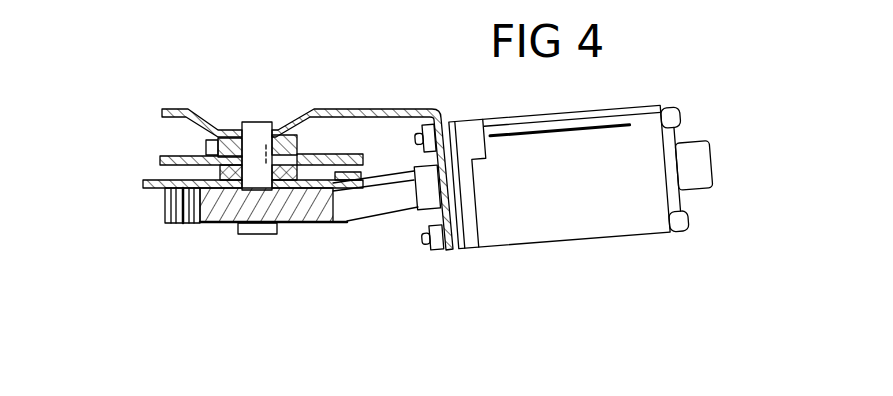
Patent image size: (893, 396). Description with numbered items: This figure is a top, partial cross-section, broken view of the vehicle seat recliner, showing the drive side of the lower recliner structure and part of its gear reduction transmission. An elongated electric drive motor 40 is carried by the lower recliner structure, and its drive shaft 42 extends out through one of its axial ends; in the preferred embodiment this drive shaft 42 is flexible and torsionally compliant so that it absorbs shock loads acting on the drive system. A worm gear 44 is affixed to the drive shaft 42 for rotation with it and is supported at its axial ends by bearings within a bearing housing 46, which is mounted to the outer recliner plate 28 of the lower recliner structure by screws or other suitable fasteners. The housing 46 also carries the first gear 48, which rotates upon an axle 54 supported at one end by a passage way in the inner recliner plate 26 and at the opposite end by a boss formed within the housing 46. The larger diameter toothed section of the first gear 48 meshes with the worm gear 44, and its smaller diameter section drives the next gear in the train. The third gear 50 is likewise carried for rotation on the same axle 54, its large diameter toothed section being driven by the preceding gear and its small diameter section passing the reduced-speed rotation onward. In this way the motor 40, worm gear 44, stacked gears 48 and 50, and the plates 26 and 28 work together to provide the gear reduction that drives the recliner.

The inner recliner plate 26 is at (190, 110).
The outer recliner plate 28 is at (147, 183).
The electric drive motor 40 is at (627, 148).
The drive shaft 42 is at (372, 206).
The worm gear 44 is at (180, 225).
The bearing housing 46 is at (257, 236).
The first gear 48 is at (317, 224).
The third gear 50 is at (183, 153).
The axle 54 is at (258, 134).